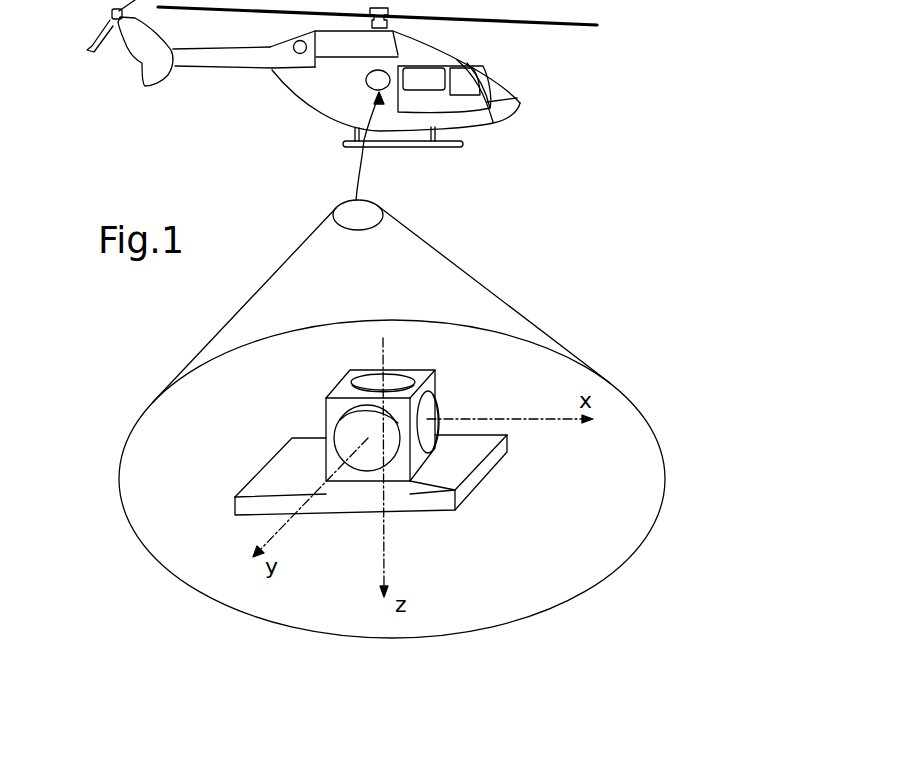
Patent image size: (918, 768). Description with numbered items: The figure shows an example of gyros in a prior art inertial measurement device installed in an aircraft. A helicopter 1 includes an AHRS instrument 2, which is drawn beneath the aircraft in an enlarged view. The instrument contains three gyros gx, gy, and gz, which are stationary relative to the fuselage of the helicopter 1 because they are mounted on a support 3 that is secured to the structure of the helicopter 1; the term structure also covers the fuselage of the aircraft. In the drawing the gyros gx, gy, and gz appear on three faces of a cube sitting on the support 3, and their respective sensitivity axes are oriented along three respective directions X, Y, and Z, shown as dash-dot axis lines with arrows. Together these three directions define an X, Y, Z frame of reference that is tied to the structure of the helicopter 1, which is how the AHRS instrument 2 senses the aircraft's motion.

The helicopter 1 is at (515, 118).
The AHRS instrument 2 is at (121, 456).
The support 3 is at (482, 472).
The gyro gx is at (437, 402).
The gyro gy is at (329, 412).
The gyro gz is at (365, 375).